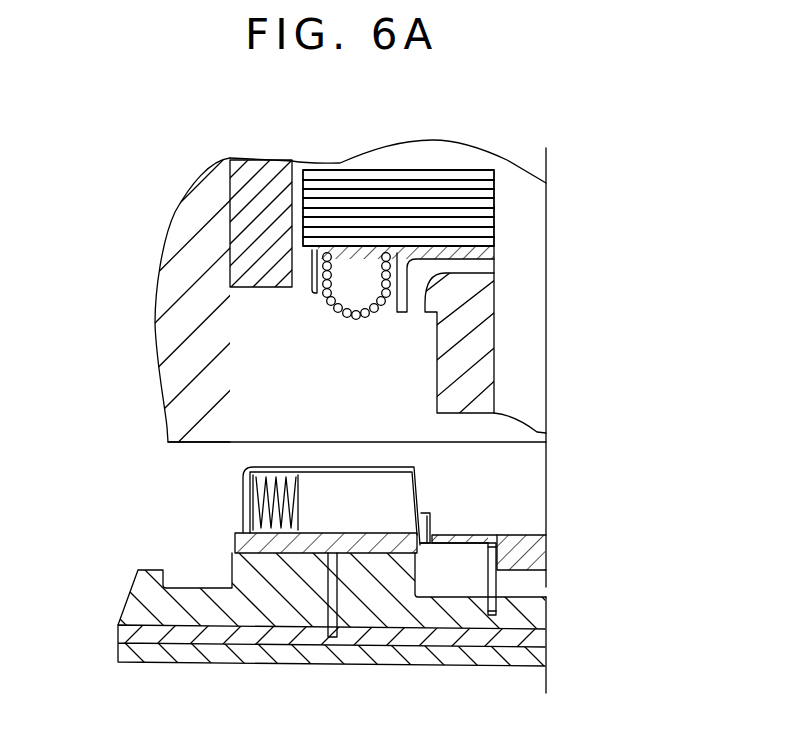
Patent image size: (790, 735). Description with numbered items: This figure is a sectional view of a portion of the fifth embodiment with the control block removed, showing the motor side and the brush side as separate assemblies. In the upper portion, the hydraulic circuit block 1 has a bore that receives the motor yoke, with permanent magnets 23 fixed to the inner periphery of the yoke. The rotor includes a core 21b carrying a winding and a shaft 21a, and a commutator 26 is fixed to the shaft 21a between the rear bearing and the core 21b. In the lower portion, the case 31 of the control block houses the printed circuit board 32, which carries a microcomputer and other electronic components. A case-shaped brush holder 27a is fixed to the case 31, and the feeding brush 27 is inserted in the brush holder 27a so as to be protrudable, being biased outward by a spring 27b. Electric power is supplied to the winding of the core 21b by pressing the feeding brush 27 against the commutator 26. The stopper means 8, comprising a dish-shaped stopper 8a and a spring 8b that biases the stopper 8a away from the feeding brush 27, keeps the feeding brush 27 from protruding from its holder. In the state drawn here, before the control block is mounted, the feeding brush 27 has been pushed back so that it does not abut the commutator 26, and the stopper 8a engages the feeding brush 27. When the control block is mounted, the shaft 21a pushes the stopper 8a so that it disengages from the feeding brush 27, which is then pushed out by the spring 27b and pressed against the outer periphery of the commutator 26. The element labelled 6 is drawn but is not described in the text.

The hydraulic circuit block 1 is at (185, 222).
The permanent magnets 23 is at (262, 188).
The shaft 21a is at (538, 273).
The core 21b is at (443, 170).
The commutator 26 is at (482, 366).
The feeding brush 27 is at (388, 497).
The brush holder 27a is at (237, 540).
The spring 27b is at (243, 497).
The stopper means 8 is at (563, 567).
The stopper 8a is at (547, 548).
The spring 8b is at (547, 597).
The case 31 is at (150, 595).
The printed circuit board 32 is at (210, 635).
The pin 6 is at (327, 642).